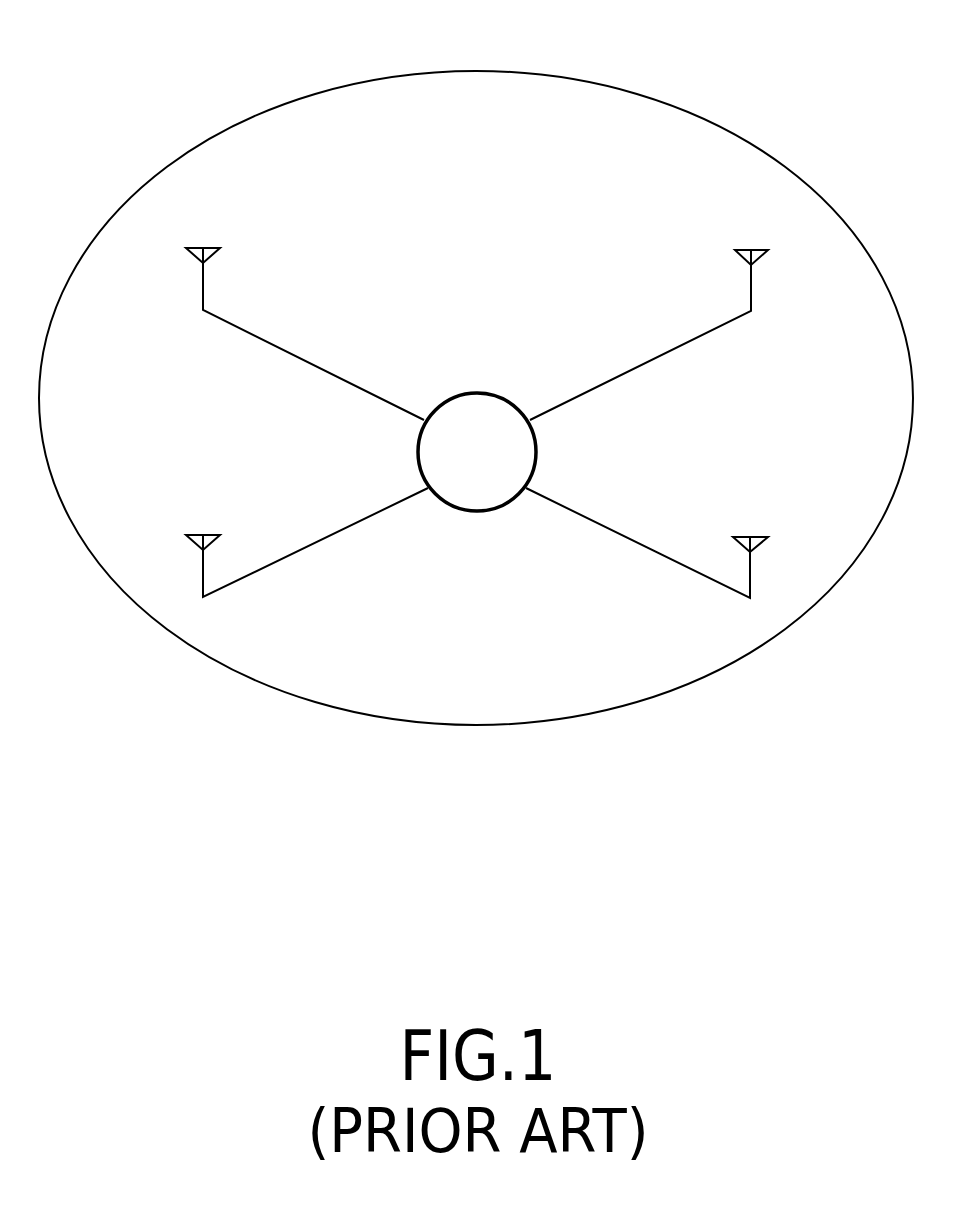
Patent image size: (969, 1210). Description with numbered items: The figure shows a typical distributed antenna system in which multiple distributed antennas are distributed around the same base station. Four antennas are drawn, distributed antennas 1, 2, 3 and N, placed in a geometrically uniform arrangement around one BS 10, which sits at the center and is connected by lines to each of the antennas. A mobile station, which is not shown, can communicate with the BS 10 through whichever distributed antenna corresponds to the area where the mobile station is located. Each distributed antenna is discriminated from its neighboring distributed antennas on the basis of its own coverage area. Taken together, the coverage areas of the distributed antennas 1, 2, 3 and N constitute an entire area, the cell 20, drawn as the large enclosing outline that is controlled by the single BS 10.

The cell 20 is at (476, 71).
The BS 10 is at (476, 393).
The distributed antenna 1 is at (671, 317).
The distributed antenna 2 is at (287, 316).
The distributed antenna 3 is at (286, 542).
The distributed antenna N is at (670, 543).